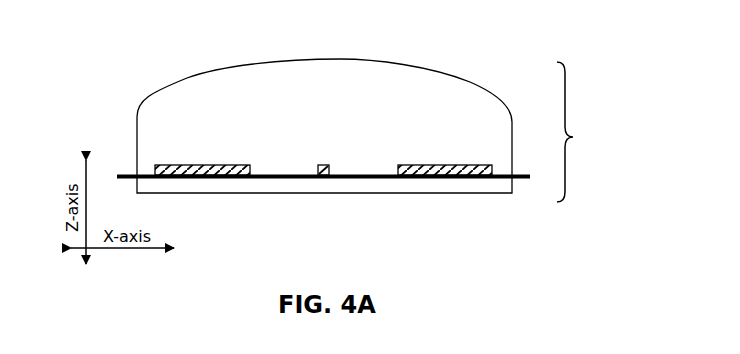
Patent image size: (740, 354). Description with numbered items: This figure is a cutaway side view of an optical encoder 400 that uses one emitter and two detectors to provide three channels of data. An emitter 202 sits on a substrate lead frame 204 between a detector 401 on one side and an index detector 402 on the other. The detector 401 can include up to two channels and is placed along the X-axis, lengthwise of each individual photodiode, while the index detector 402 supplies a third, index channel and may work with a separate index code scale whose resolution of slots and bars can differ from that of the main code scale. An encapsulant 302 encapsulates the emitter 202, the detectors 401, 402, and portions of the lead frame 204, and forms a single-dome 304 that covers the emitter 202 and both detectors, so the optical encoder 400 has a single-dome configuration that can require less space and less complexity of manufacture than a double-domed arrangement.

The optical encoder 400 is at (593, 132).
The substrate lead frame 204 is at (265, 181).
The encapsulant 302 is at (188, 101).
The single-dome 304 is at (343, 58).
The index detector 402 is at (231, 165).
The detector 401 is at (470, 165).
The emitter 202 is at (328, 165).